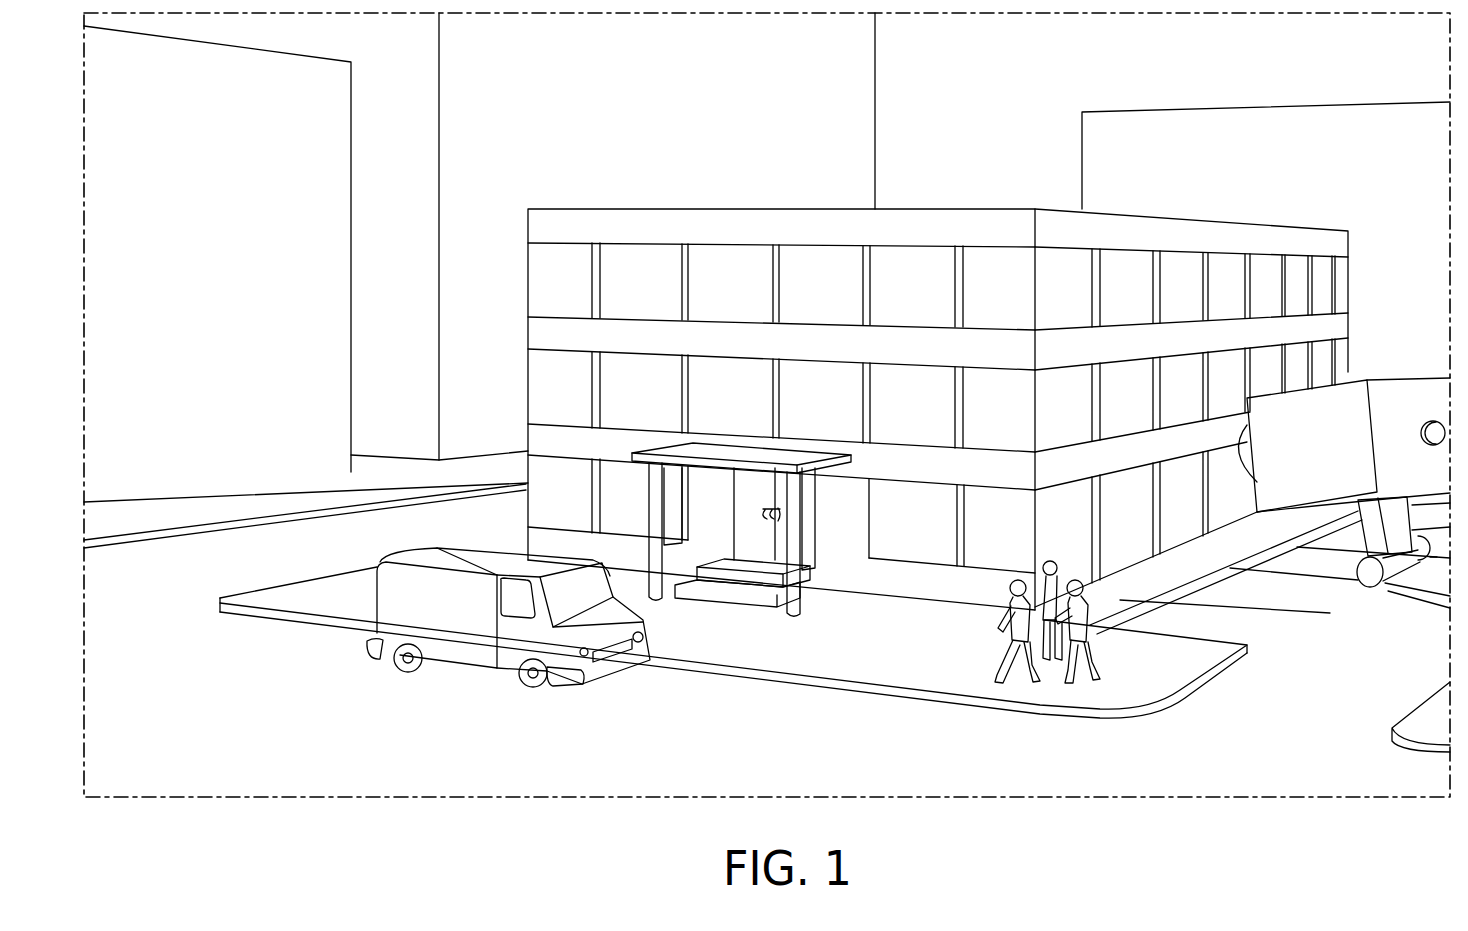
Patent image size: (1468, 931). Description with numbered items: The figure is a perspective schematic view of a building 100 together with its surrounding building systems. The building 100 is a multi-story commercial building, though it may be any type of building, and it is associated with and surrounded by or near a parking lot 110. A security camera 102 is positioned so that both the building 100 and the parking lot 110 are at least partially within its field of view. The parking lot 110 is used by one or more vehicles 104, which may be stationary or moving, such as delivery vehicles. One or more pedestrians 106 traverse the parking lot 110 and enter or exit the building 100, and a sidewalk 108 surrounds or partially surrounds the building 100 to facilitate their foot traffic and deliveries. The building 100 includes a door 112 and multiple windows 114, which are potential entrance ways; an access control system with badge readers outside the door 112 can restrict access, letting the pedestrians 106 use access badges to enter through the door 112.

The building 100 is at (760, 186).
The security camera 102 is at (1447, 380).
The vehicles 104 is at (422, 556).
The pedestrians 106 is at (1036, 696).
The sidewalk 108 is at (1233, 637).
The parking lot 110 is at (1313, 715).
The door 112 is at (792, 492).
The windows 114 is at (900, 500).